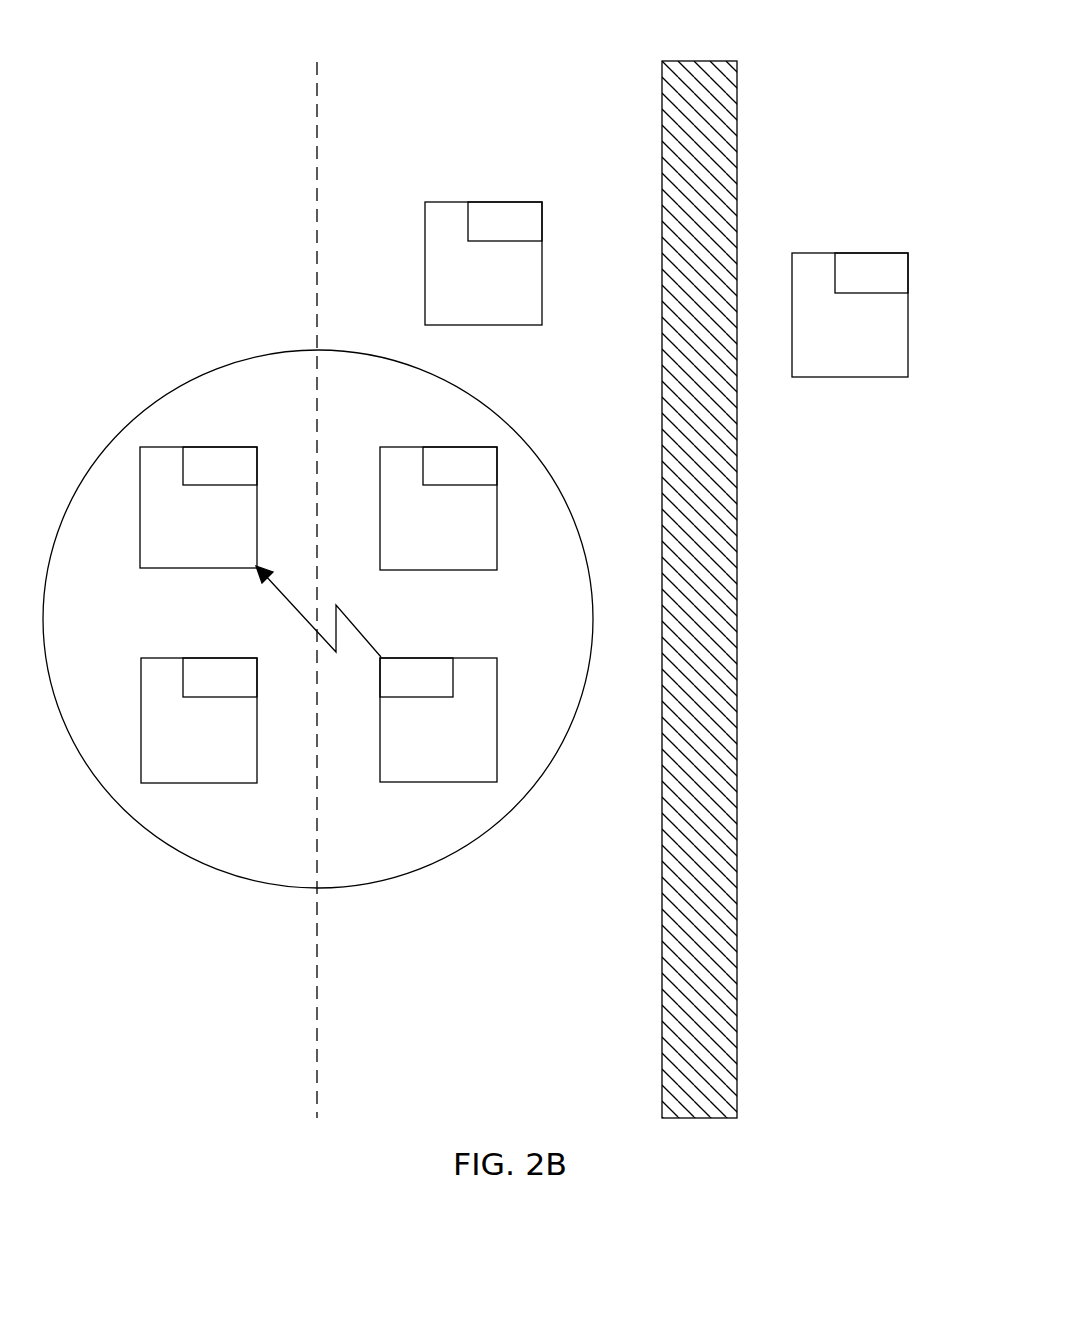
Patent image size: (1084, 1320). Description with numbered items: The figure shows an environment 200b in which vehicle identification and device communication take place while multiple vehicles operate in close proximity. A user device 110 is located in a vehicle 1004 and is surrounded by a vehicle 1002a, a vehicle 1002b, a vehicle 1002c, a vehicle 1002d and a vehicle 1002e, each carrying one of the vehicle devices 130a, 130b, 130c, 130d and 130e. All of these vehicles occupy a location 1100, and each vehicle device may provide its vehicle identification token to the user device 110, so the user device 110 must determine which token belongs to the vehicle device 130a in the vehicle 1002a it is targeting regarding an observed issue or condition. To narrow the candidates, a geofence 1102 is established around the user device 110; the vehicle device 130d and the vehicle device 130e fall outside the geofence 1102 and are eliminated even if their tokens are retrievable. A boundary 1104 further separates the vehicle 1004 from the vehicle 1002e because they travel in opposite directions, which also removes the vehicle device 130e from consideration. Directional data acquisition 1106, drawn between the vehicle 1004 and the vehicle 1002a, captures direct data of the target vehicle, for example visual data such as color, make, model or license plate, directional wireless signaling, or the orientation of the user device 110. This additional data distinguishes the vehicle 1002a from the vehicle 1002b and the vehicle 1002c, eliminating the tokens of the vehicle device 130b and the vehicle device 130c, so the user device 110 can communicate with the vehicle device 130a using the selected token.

The environment 200b is at (812, 48).
The location 1100 is at (570, 67).
The geofence 1102 is at (248, 357).
The boundary 1104 is at (697, 1118).
The directional data acquisition 1106 is at (355, 621).
The vehicle 1002a is at (163, 459).
The vehicle 1002b is at (479, 464).
The vehicle 1002c is at (161, 697).
The vehicle 1002d is at (463, 241).
The vehicle 1002e is at (877, 287).
The vehicle 1004 is at (485, 698).
The vehicle device 130a is at (207, 447).
The vehicle device 130b is at (448, 447).
The vehicle device 130c is at (190, 658).
The vehicle device 130d is at (495, 202).
The vehicle device 130e is at (860, 253).
The user device 110 is at (470, 658).